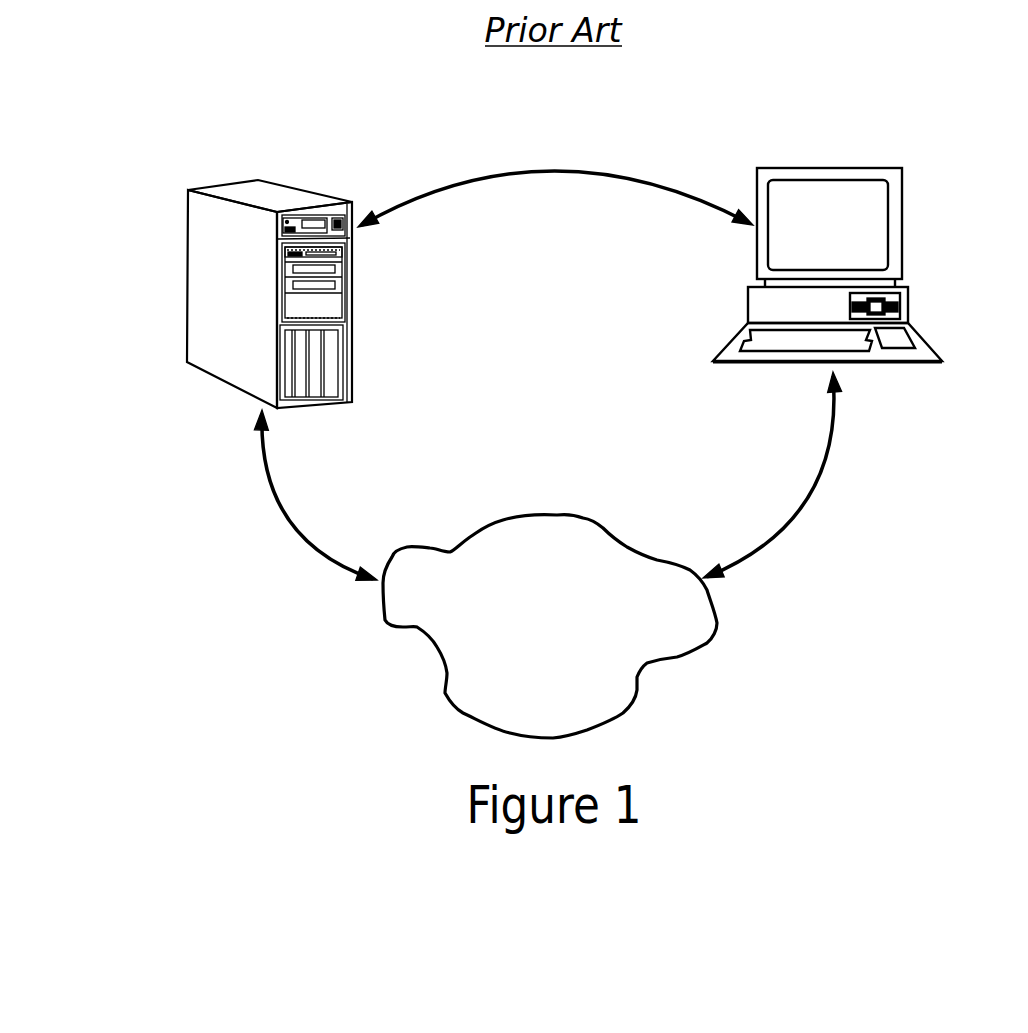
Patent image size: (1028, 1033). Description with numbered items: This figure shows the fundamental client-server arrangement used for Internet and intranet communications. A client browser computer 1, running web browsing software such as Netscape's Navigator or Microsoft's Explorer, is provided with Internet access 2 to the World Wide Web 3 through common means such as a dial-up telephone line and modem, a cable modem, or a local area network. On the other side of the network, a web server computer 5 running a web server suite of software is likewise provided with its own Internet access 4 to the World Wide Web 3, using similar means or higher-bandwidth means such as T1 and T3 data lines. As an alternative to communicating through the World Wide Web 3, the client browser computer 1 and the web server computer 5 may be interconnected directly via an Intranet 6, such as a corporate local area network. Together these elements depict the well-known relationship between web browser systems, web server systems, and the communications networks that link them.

The client browser computer 1 is at (910, 280).
The Internet access 2 is at (778, 540).
The World Wide Web 3 is at (603, 530).
The Internet access 4 is at (293, 537).
The web server computer 5 is at (357, 310).
The Intranet 6 is at (558, 173).